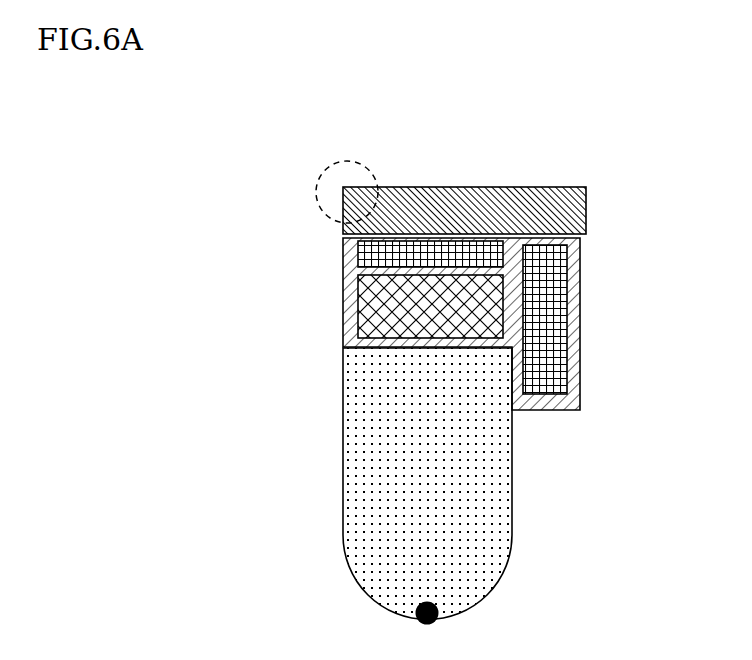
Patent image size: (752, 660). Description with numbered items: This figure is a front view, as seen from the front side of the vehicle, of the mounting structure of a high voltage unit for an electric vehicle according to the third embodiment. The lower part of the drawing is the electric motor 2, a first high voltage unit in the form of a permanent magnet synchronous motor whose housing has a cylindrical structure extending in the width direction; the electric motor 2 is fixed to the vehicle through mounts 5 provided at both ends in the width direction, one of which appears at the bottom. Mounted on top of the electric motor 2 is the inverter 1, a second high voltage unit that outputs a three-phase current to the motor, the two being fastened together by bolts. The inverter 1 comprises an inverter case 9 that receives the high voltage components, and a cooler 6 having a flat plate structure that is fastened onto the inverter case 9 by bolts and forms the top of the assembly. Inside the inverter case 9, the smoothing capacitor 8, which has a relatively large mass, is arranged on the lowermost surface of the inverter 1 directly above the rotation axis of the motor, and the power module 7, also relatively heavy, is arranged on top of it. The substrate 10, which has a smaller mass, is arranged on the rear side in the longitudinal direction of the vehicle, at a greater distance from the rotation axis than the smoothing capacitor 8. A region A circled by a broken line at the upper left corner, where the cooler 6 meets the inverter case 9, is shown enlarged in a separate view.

The inverter 1 is at (282, 198).
The electric motor 2 is at (285, 362).
The mount 5 is at (436, 618).
The cooler 6 is at (543, 211).
The power module 7 is at (490, 250).
The smoothing capacitor 8 is at (490, 287).
The inverter case 9 is at (580, 408).
The substrate 10 is at (545, 372).
The region A is at (370, 168).